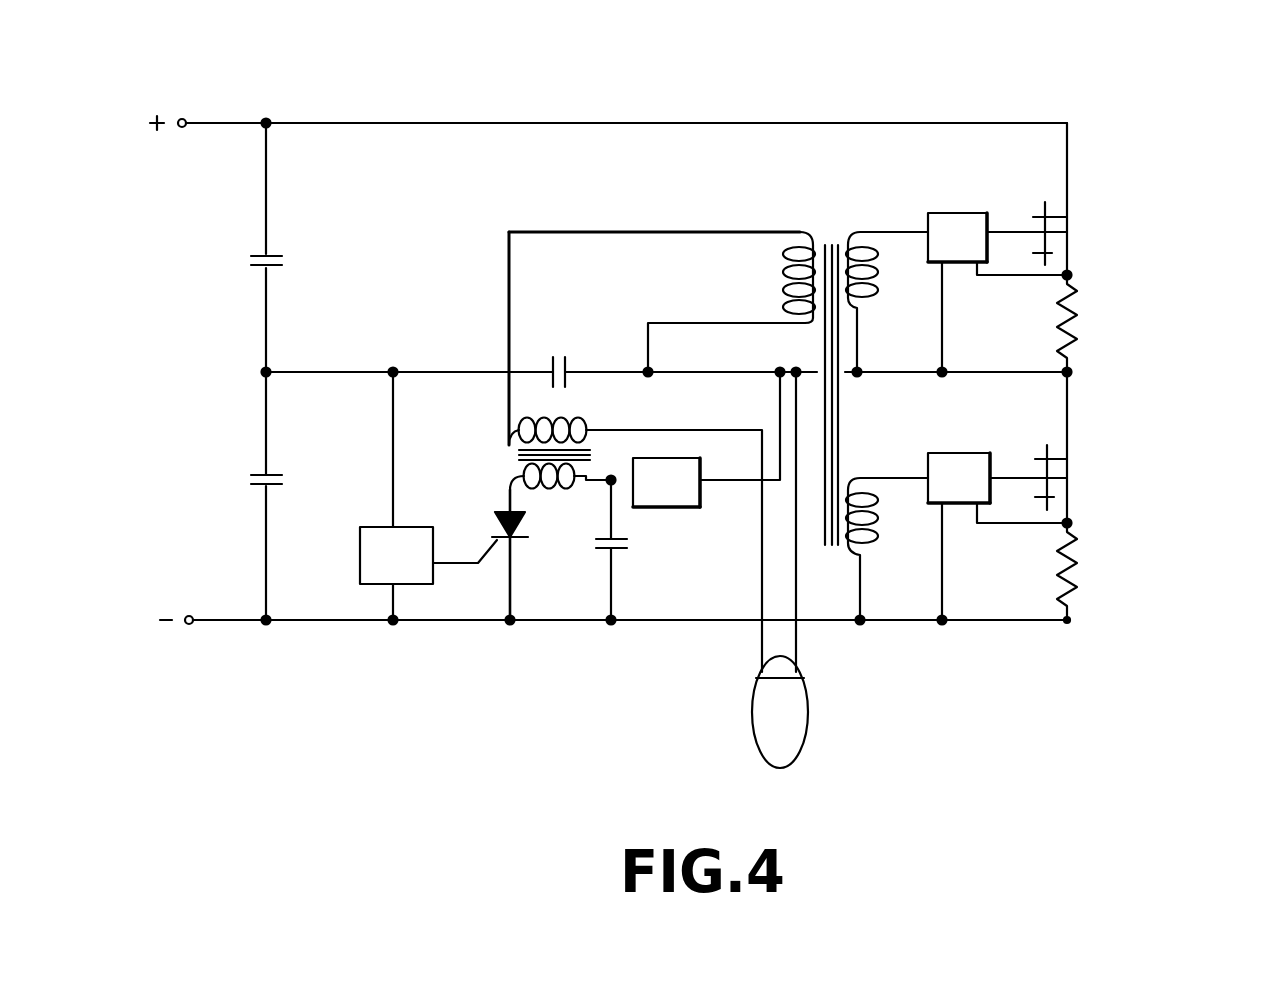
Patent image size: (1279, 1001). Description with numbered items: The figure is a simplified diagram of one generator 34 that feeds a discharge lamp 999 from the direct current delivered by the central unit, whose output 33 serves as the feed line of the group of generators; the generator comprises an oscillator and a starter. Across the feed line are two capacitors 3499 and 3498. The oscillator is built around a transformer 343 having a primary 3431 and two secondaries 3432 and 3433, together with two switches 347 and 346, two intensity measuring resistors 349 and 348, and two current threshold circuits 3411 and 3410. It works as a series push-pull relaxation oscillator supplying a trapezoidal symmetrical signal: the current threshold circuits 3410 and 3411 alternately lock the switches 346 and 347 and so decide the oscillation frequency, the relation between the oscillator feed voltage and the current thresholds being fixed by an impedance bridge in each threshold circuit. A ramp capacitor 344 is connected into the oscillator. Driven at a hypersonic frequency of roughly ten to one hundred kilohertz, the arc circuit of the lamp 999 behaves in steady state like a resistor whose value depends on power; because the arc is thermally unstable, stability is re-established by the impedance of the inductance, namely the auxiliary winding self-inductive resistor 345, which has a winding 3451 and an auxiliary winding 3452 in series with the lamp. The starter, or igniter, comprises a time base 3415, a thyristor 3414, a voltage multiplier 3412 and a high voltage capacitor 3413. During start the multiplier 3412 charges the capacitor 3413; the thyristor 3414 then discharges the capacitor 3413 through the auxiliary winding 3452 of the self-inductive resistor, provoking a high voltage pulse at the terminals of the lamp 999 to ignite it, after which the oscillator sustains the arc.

The output of the central unit 33 is at (198, 150).
The generator 34 is at (684, 102).
The transformer 343 is at (827, 412).
The primary 3431 is at (786, 288).
The secondary 3432 is at (880, 284).
The secondary 3433 is at (878, 540).
The current threshold circuit 3411 is at (953, 228).
The current threshold circuit 3410 is at (950, 470).
The switch 347 is at (1082, 232).
The switch 346 is at (1082, 478).
The intensity measuring resistor 349 is at (1080, 322).
The intensity measuring resistor 348 is at (1078, 550).
The capacitor 3499 is at (258, 262).
The capacitor 3498 is at (258, 480).
The auxiliary winding self-inductive resistor 345 is at (581, 452).
The winding of the self-inductive resistor 3451 is at (578, 435).
The auxiliary winding 3452 is at (566, 486).
The ramp capacitor 344 is at (560, 350).
The time base 3415 is at (374, 542).
The thyristor 3414 is at (505, 512).
The voltage multiplier 3412 is at (688, 507).
The high voltage capacitor 3413 is at (597, 545).
The lamp 999 is at (795, 712).